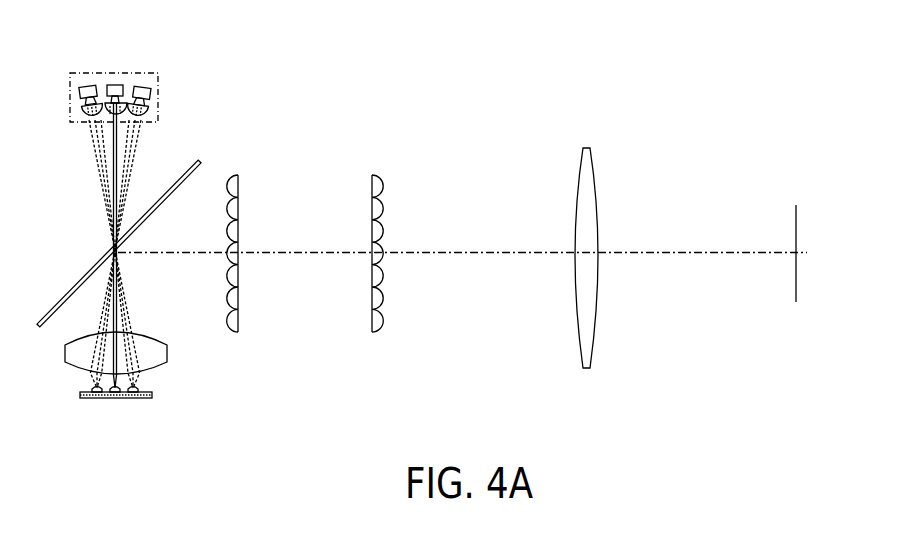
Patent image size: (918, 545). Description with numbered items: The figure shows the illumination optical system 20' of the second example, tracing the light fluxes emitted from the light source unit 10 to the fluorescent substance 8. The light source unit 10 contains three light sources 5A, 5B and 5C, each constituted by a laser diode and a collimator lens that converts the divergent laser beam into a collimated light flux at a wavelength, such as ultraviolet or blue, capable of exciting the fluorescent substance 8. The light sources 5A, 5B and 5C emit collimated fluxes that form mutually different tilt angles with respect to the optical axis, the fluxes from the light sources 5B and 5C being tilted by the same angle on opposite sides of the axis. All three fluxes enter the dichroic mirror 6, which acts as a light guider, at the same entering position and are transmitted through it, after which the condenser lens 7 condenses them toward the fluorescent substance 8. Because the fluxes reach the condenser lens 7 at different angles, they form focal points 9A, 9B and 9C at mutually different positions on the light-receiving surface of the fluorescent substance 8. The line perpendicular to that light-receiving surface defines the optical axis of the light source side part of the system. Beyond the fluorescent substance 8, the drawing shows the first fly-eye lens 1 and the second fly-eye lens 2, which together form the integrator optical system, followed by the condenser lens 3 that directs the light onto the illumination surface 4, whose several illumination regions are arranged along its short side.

The illumination optical system 20' is at (412, 46).
The light source unit 10 is at (70, 88).
The light source 5A is at (115, 84).
The light source 5B is at (86, 85).
The light source 5C is at (144, 86).
The dichroic mirror 6 is at (199, 160).
The first fly-eye lens 1 is at (222, 163).
The second fly-eye lens 2 is at (365, 163).
The condenser lens 3 is at (586, 246).
The illumination surface 4 is at (795, 240).
The condenser lens 7 is at (167, 352).
The fluorescent substance 8 is at (152, 395).
The focal point 9A is at (118, 400).
The focal point 9B is at (132, 400).
The focal point 9C is at (93, 400).